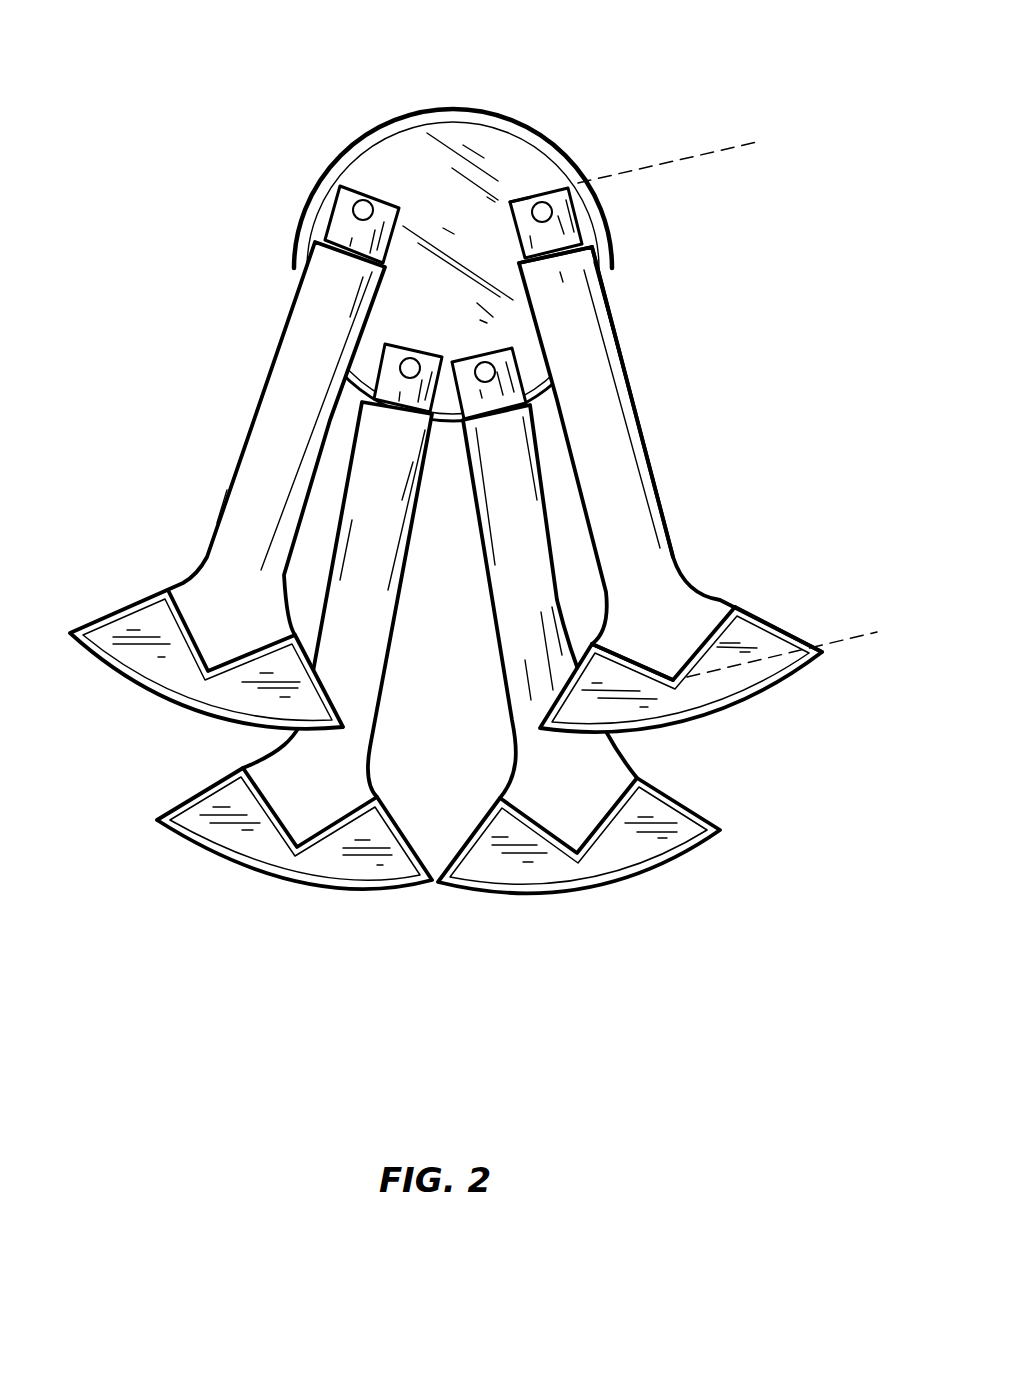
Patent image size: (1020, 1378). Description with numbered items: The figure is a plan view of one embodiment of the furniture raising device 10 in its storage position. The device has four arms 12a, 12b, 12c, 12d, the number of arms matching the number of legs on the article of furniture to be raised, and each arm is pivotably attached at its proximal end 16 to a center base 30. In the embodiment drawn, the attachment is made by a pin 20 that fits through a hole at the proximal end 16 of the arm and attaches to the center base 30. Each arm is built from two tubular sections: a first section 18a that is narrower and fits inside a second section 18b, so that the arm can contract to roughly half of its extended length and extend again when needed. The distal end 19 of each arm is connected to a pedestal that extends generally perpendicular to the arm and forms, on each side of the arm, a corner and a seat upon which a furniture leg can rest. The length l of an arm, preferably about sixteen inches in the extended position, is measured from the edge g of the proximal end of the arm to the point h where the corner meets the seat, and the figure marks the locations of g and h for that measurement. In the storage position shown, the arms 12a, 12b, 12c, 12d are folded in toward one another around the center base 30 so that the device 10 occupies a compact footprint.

The furniture raising device 10 is at (440, 98).
The arm 12a is at (610, 403).
The arm 12b is at (545, 593).
The arm 12c is at (337, 593).
The arm 12d is at (272, 433).
The proximal end 16 is at (578, 214).
The first section 18a is at (585, 236).
The second section 18b is at (642, 402).
The distal end 19 is at (752, 608).
The pin 20 is at (540, 203).
The center base 30 is at (402, 315).
The edge of the proximal end of the arm g is at (529, 198).
The point where the corner meets the seat h is at (672, 668).
The length of the arm l is at (740, 148).